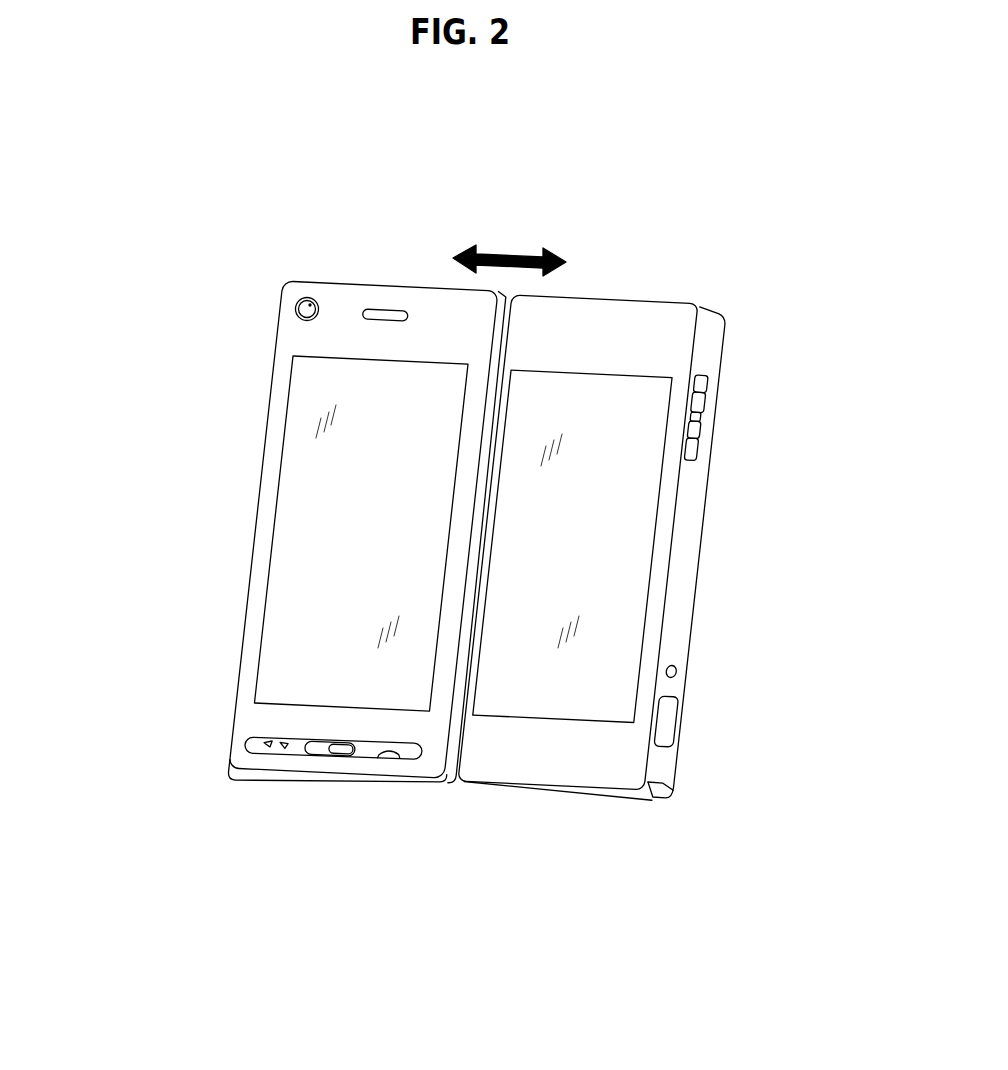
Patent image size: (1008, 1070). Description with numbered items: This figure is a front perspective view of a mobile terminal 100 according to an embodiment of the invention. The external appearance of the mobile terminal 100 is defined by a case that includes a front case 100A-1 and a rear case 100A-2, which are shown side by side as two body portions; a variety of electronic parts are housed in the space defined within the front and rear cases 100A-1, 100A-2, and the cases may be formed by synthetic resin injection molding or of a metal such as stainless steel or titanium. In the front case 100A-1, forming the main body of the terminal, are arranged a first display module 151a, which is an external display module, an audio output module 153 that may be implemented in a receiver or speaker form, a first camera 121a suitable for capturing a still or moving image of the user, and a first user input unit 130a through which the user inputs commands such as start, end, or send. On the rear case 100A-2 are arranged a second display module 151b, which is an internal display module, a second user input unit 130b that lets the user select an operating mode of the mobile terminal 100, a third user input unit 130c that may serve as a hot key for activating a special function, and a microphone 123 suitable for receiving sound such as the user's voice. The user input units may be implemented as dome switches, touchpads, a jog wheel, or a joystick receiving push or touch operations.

The mobile terminal 100 is at (143, 302).
The front case 100A-1 is at (502, 297).
The rear case 100A-2 is at (712, 322).
The first camera 121a is at (306, 298).
The audio output module 153 is at (388, 310).
The first display module 151a is at (307, 508).
The second display module 151b is at (622, 557).
The first user input unit 130a is at (257, 745).
The second user input unit 130b is at (704, 415).
The third user input unit 130c is at (668, 718).
The microphone 123 is at (545, 788).